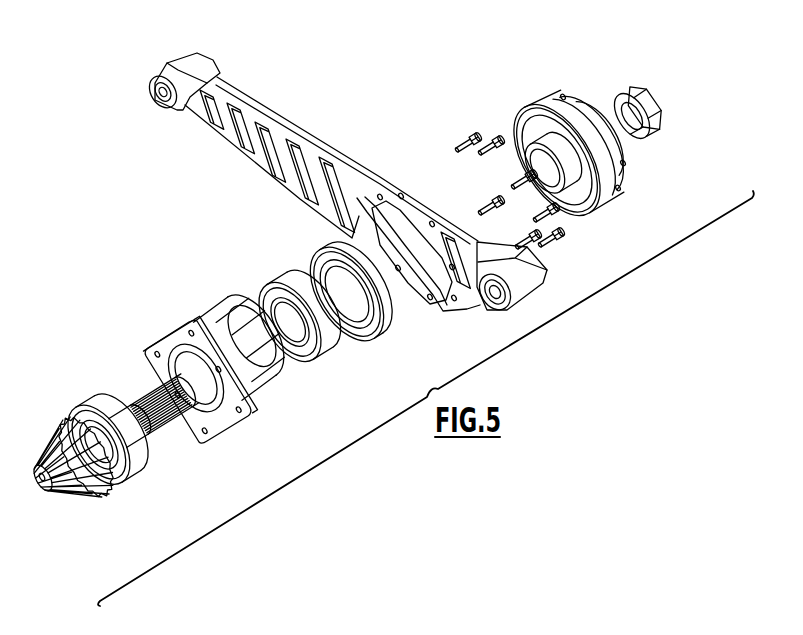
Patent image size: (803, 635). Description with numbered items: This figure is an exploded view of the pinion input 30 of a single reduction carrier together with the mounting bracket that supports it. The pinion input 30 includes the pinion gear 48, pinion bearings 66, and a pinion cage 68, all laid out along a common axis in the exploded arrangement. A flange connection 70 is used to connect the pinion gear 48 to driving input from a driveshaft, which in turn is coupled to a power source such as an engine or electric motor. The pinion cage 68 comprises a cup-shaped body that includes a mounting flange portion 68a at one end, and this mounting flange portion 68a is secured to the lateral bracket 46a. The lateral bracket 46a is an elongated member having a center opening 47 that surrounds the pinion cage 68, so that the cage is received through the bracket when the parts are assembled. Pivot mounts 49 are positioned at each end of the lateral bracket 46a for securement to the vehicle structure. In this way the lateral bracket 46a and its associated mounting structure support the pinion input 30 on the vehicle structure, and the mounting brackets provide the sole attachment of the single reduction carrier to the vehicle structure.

The pinion input 30 is at (94, 281).
The lateral bracket 46a is at (310, 130).
The center opening 47 is at (404, 232).
The pinion gear 48 is at (87, 504).
The pivot mounts 49 is at (178, 58).
The pinion bearings 66 is at (143, 477).
The pinion cage 68 is at (212, 312).
The mounting flange portion 68a is at (250, 442).
The flange connection 70 is at (632, 193).